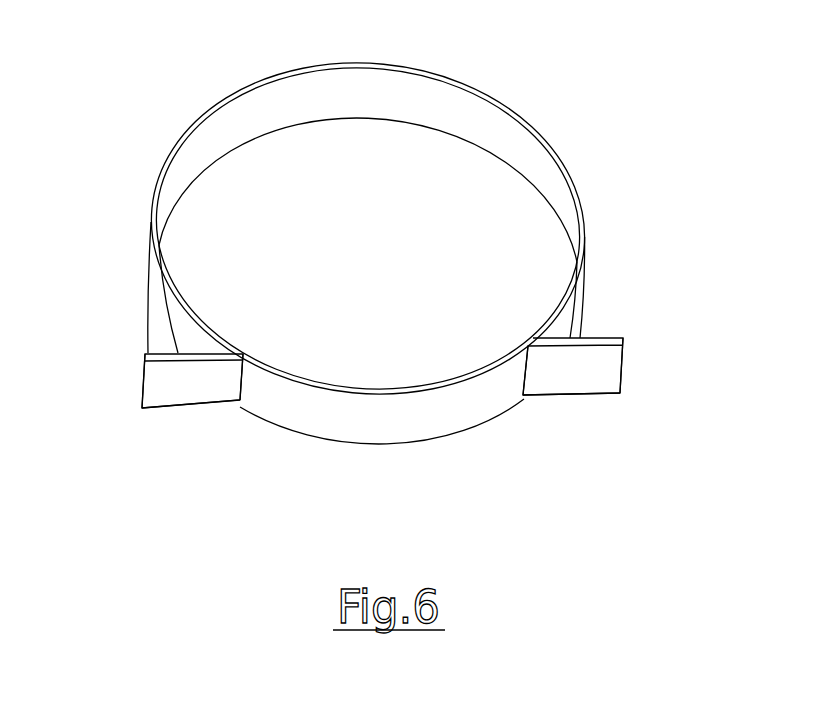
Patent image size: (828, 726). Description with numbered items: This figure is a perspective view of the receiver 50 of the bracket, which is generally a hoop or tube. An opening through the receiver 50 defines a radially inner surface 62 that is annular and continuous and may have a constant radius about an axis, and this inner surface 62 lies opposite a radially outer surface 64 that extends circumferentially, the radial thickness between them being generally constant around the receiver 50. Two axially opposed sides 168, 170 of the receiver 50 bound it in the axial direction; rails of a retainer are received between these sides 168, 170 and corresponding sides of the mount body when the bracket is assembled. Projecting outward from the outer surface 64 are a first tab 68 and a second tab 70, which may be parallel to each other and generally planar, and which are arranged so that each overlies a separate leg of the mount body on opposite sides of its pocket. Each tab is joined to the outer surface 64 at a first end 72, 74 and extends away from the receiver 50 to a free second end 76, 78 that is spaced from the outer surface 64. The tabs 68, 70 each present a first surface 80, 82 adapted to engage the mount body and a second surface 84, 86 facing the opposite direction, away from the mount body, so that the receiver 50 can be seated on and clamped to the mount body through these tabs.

The receiver 50 is at (528, 50).
The radially inner surface 62 is at (422, 97).
The radially outer surface 64 is at (433, 422).
The first tab 68 is at (178, 421).
The second tab 70 is at (599, 411).
The first end of first tab 72 is at (235, 398).
The first end of second tab 74 is at (523, 395).
The second end of first tab 76 is at (143, 385).
The second end of second tab 78 is at (623, 367).
The first surface of first tab 80 is at (160, 397).
The first surface of second tab 82 is at (568, 383).
The second surface of first tab 84 is at (148, 353).
The second surface of second tab 86 is at (595, 338).
The axially opposed side of receiver 168 is at (548, 145).
The axially opposed side of receiver 170 is at (452, 137).